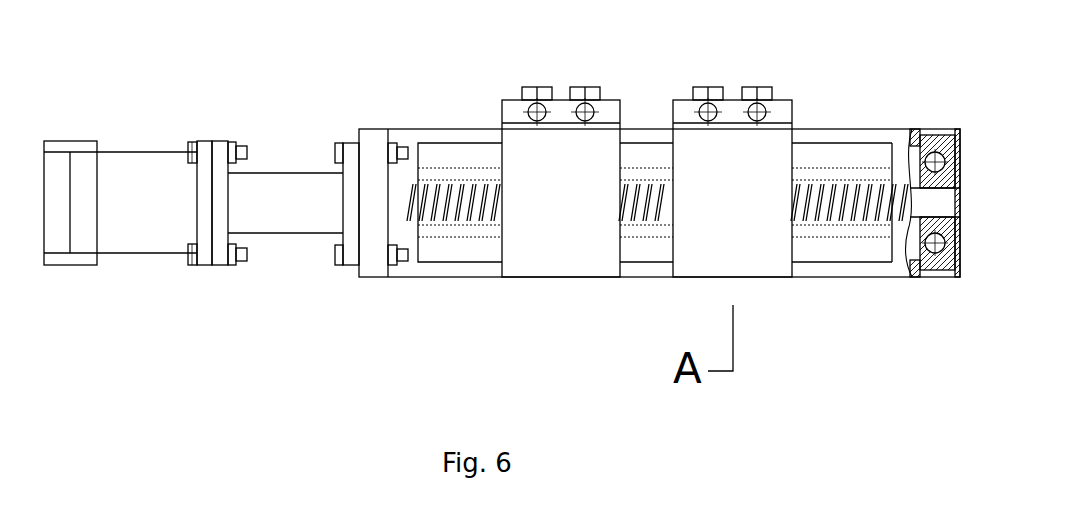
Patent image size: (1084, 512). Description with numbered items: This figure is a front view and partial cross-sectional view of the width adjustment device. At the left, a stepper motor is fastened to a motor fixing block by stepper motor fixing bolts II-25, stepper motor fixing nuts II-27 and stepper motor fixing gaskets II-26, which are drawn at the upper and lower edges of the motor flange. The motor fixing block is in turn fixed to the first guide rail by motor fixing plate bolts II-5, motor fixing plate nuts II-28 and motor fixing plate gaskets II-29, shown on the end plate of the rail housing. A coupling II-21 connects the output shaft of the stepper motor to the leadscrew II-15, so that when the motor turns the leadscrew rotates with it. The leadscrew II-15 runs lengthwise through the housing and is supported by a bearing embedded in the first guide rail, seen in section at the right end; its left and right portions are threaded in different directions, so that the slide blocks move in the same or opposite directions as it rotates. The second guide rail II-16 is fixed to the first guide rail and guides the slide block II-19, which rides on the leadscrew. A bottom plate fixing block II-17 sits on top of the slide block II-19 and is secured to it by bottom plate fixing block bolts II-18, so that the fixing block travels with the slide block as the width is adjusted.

The stepper motor fixing bolt II-25 is at (193, 145).
The stepper motor fixing nut II-27 is at (240, 157).
The stepper motor fixing gasket II-26 is at (228, 265).
The coupling II-21 is at (285, 173).
The motor fixing plate bolt II-5 is at (342, 263).
The motor fixing plate gasket II-29 is at (392, 143).
The motor fixing plate nut II-28 is at (393, 262).
The second guide rail II-16 is at (447, 165).
The leadscrew II-15 is at (649, 188).
The slide block II-19 is at (520, 257).
The bottom plate fixing block II-17 is at (562, 110).
The bottom plate fixing block bolt II-18 is at (749, 90).